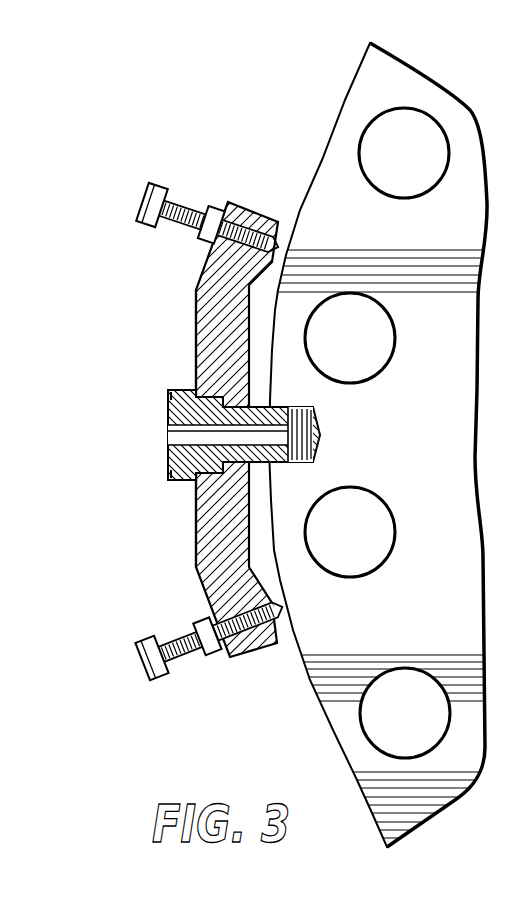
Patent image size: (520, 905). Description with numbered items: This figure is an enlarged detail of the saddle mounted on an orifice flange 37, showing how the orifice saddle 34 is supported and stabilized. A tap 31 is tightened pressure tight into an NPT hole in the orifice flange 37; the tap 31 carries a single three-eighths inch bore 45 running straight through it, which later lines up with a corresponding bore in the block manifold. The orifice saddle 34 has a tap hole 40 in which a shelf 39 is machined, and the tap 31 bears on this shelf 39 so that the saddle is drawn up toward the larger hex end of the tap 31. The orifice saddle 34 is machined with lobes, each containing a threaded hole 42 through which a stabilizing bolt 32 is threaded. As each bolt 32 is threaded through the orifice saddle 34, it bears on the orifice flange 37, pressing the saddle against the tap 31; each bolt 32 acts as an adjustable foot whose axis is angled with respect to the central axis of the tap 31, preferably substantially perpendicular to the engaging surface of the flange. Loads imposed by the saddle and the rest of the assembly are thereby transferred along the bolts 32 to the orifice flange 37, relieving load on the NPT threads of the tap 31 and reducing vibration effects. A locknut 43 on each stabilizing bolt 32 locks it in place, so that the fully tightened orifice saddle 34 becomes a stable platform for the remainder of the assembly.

The tap 31 is at (175, 390).
The stabilizing bolt 32 is at (140, 207).
The orifice saddle 34 is at (196, 551).
The orifice flange 37 is at (320, 434).
The shelf 39 is at (196, 337).
The tap hole 40 is at (196, 497).
The threaded hole 42 is at (279, 246).
The locknut 43 is at (212, 207).
The bore 45 is at (183, 436).